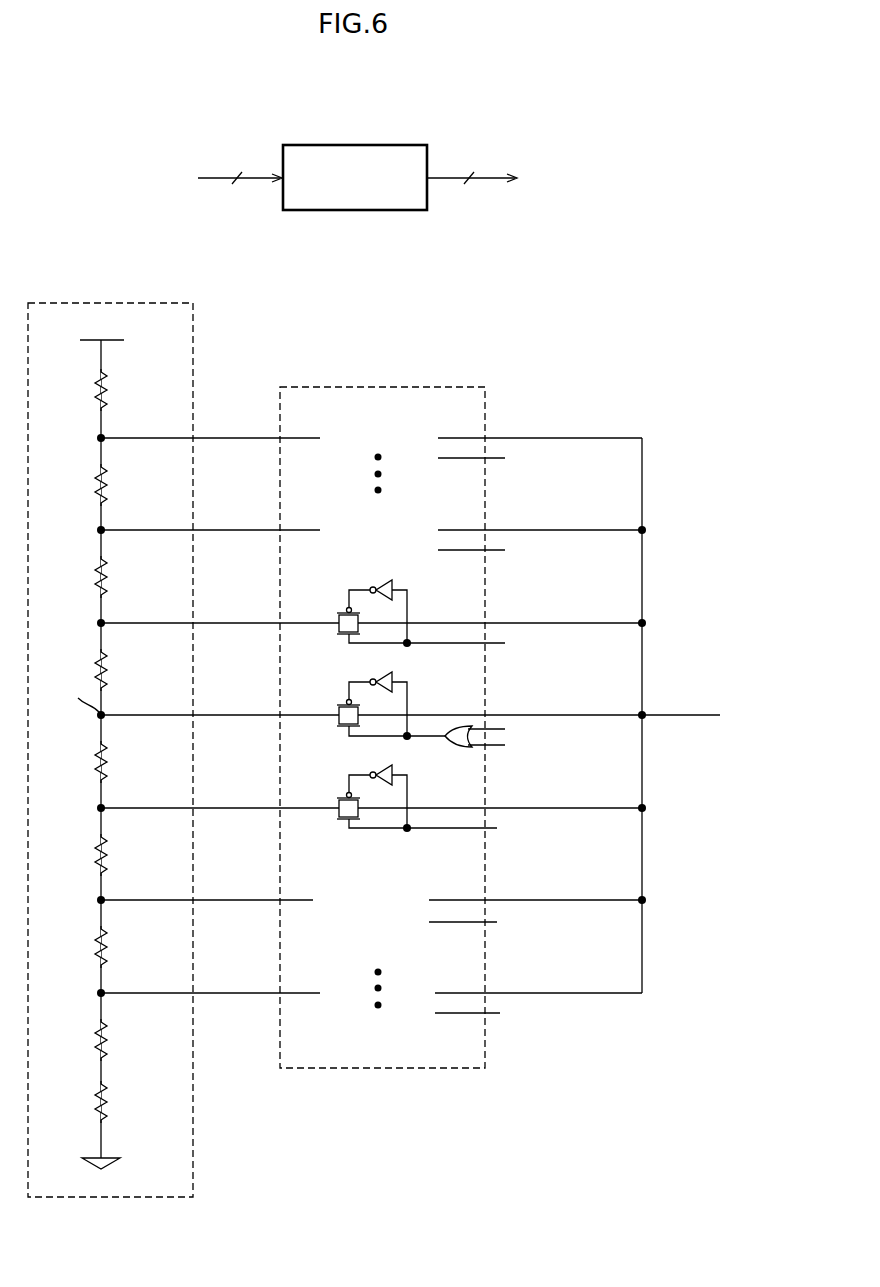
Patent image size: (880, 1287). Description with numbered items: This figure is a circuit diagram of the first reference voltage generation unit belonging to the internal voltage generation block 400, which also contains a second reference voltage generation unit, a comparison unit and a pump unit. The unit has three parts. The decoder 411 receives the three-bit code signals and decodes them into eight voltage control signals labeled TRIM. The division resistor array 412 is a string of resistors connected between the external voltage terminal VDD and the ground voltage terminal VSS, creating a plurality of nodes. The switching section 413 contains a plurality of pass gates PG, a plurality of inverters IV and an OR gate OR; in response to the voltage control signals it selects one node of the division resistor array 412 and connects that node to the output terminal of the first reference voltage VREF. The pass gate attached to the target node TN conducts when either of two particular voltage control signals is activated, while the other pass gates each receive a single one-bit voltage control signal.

The internal voltage generation block 400 is at (91, 83).
The decoder 411 is at (405, 145).
The division resistor array 412 is at (155, 303).
The switching section 413 is at (445, 387).